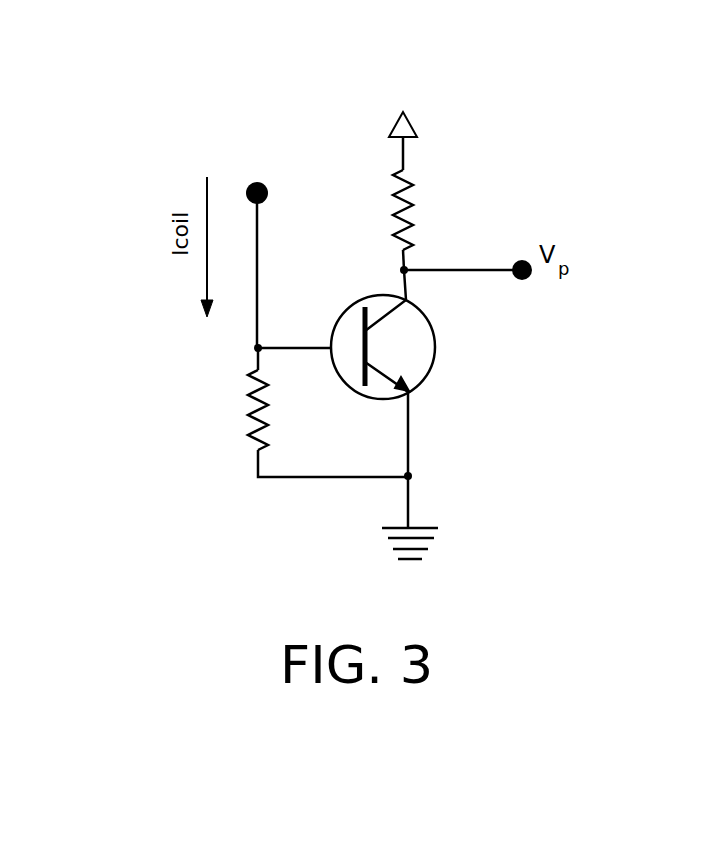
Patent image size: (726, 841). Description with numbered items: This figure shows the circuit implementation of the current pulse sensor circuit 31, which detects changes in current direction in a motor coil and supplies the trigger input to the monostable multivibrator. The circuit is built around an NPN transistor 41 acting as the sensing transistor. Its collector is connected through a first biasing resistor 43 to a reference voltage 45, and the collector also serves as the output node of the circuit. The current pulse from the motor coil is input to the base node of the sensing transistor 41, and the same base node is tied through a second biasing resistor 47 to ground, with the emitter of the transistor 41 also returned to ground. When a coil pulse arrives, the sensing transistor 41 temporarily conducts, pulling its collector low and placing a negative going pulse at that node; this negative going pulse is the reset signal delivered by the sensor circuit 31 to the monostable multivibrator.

The current pulse sensor circuit 31 is at (540, 365).
The NPN transistor 41 is at (425, 375).
The first biasing resistor 43 is at (406, 185).
The reference voltage 45 is at (410, 72).
The second biasing resistor 47 is at (249, 415).